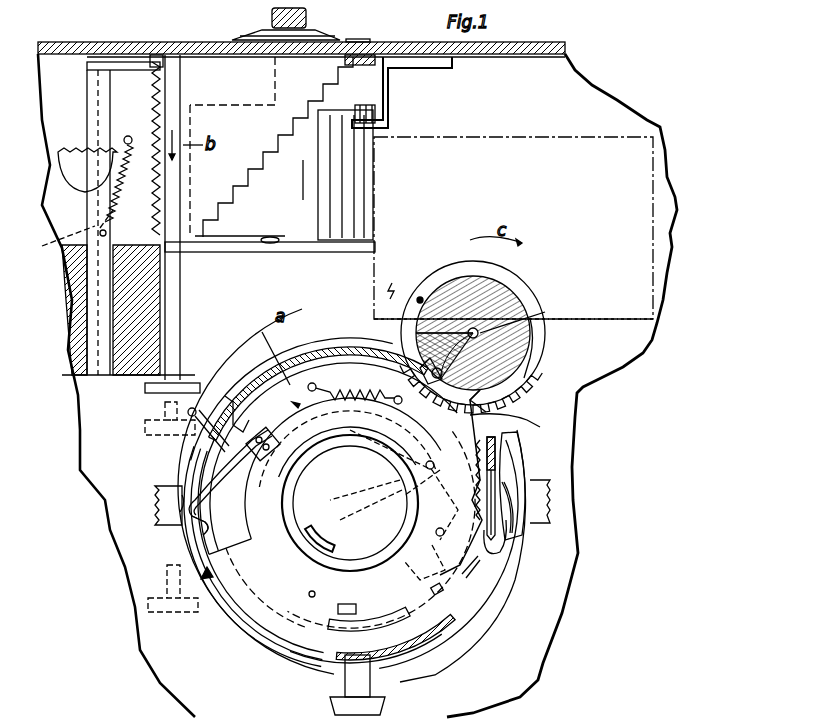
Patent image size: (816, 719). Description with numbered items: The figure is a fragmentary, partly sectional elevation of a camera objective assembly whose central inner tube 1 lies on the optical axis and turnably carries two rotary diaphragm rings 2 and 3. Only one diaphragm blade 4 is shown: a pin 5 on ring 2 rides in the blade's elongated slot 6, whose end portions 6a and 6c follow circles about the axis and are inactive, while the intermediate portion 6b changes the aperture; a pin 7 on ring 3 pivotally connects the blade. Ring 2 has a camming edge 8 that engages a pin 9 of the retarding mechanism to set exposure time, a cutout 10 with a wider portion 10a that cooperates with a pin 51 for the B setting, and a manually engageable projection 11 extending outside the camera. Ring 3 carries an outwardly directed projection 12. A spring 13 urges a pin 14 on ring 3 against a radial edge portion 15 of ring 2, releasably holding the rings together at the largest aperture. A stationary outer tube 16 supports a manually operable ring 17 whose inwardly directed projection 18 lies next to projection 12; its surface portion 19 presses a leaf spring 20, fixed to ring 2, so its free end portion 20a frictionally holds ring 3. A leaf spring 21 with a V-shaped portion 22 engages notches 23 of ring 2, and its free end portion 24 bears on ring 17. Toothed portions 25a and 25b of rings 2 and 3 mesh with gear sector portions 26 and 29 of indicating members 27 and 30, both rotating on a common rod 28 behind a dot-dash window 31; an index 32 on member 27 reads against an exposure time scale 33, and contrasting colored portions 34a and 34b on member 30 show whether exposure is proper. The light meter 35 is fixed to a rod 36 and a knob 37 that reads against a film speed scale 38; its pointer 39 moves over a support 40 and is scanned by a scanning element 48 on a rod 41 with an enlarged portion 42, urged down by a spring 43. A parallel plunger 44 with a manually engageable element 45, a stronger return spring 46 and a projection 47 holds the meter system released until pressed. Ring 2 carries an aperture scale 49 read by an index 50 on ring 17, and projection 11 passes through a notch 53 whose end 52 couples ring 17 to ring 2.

The central inner tube 1 is at (285, 528).
The rotary diaphragm ring 2 is at (275, 501).
The rotary diaphragm ring 3 is at (288, 396).
The diaphragm blade 4 is at (400, 470).
The pin 5 is at (425, 462).
The elongated slot 6 is at (430, 500).
The end portion of slot 6a is at (430, 461).
The intermediate portion of slot 6b is at (400, 505).
The end portion of slot 6c is at (425, 562).
The pin 7 is at (436, 533).
The camming edge 8 is at (280, 568).
The pin 9 is at (315, 592).
The cutout 10 is at (400, 612).
The wider portion of slot 10a is at (385, 610).
The projection 11 is at (352, 680).
The outwardly directed projection 12 is at (200, 448).
The spring 13 is at (315, 370).
The pin 14 is at (418, 372).
The radial edge portion 15 is at (366, 399).
The outer tube 16 is at (265, 380).
The ring 17 is at (478, 618).
The inwardly directed projection 18 is at (233, 430).
The surface portion 19 is at (180, 486).
The leaf spring 20 is at (222, 490).
The free end portion of leaf spring 20a is at (195, 526).
The leaf spring 21 is at (495, 492).
The V-shaped portion 22 is at (500, 545).
The notches 23 is at (470, 575).
The free end portion 24 is at (514, 494).
The toothed portion 25a is at (510, 418).
The toothed portion 25b is at (520, 440).
The gear sector portion 26 is at (505, 405).
The movable indicating member 27 is at (548, 310).
The pin or rod 28 is at (530, 300).
The gear sector portion 29 is at (528, 378).
The movable indicating member 30 is at (530, 327).
The window 31 is at (500, 135).
The index 32 is at (418, 298).
The scale of exposure times 33 is at (433, 245).
The contrasting colored portion 34a is at (425, 333).
The contrasting colored portion 34b is at (495, 300).
The light meter 35 is at (376, 114).
The rod 36 is at (245, 50).
The knob 37 is at (306, 20).
The scale of film speeds 38 is at (360, 41).
The movable pointer 39 is at (272, 237).
The support 40 is at (222, 255).
The rod 41 is at (176, 180).
The enlarged portion 42 is at (160, 388).
The spring 43 is at (150, 218).
The plunger 44 is at (104, 128).
The manually engageable element 45 is at (68, 182).
The return spring 46 is at (70, 234).
The projection 47 is at (125, 66).
The scanning element 48 is at (330, 95).
The scale of aperture sizes 49 is at (262, 615).
The index 50 is at (210, 575).
The pin 51 is at (442, 590).
The end of notch 52 is at (372, 670).
The elongated slot or notch 53 is at (228, 620).